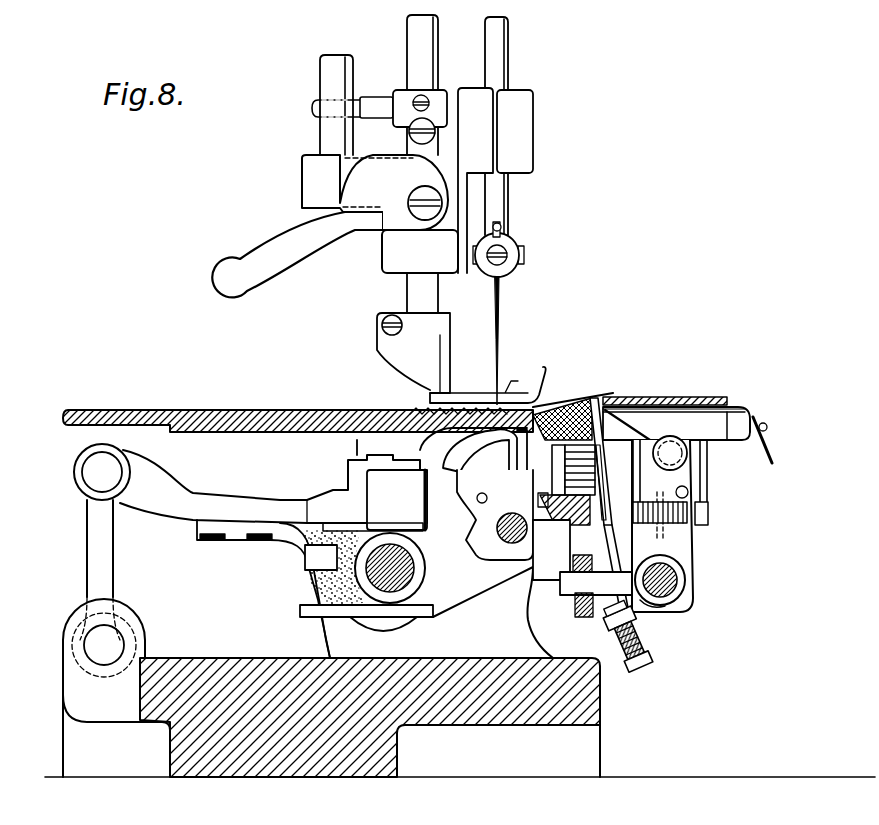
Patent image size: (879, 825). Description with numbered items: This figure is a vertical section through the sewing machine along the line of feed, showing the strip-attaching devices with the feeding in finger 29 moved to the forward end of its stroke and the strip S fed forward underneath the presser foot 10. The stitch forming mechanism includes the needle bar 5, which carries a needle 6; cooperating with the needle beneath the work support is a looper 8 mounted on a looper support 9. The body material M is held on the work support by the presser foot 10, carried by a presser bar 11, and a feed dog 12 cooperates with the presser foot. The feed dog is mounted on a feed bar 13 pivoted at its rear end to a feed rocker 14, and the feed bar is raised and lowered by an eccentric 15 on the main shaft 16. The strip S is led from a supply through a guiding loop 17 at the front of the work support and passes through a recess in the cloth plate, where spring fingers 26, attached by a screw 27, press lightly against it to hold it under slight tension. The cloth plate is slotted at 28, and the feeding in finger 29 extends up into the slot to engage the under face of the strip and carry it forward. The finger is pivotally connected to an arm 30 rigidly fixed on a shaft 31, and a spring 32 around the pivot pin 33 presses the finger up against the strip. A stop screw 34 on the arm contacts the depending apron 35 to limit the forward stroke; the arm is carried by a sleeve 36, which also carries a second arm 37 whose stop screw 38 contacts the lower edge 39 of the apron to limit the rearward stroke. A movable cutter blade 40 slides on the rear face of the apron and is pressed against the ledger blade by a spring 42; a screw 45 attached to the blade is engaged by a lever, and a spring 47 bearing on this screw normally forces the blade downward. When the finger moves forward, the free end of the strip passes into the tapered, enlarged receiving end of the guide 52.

The needle bar 5 is at (500, 42).
The needle 6 is at (497, 325).
The looper 8 is at (488, 435).
The looper support 9 is at (500, 537).
The presser foot 10 is at (463, 393).
The presser bar 11 is at (414, 296).
The feed dog 12 is at (413, 407).
The feed bar 13 is at (273, 510).
The feed rocker 14 is at (107, 552).
The eccentric 15 is at (415, 548).
The main shaft 16 is at (400, 577).
The guiding loop 17 is at (765, 430).
The spring fingers 26 is at (733, 420).
The screw 27 is at (753, 413).
The slot 28 is at (627, 398).
The feeding in finger 29 is at (633, 433).
The arm 30 is at (678, 540).
The shaft 31 is at (683, 593).
The spring 32 is at (687, 473).
The pivot pin 33 is at (672, 445).
The stop screw 34 is at (708, 505).
The depending apron 35 is at (616, 482).
The sleeve 36 is at (688, 580).
The second arm 37 is at (610, 622).
The stop screw 38 is at (633, 655).
The lower edge 39 is at (622, 604).
The movable cutter blade 40 is at (605, 463).
The spring 42 is at (570, 457).
The screw 45 is at (570, 587).
The spring 47 is at (527, 583).
The guide 52 is at (592, 402).
The body material M is at (572, 395).
The strip S is at (758, 418).